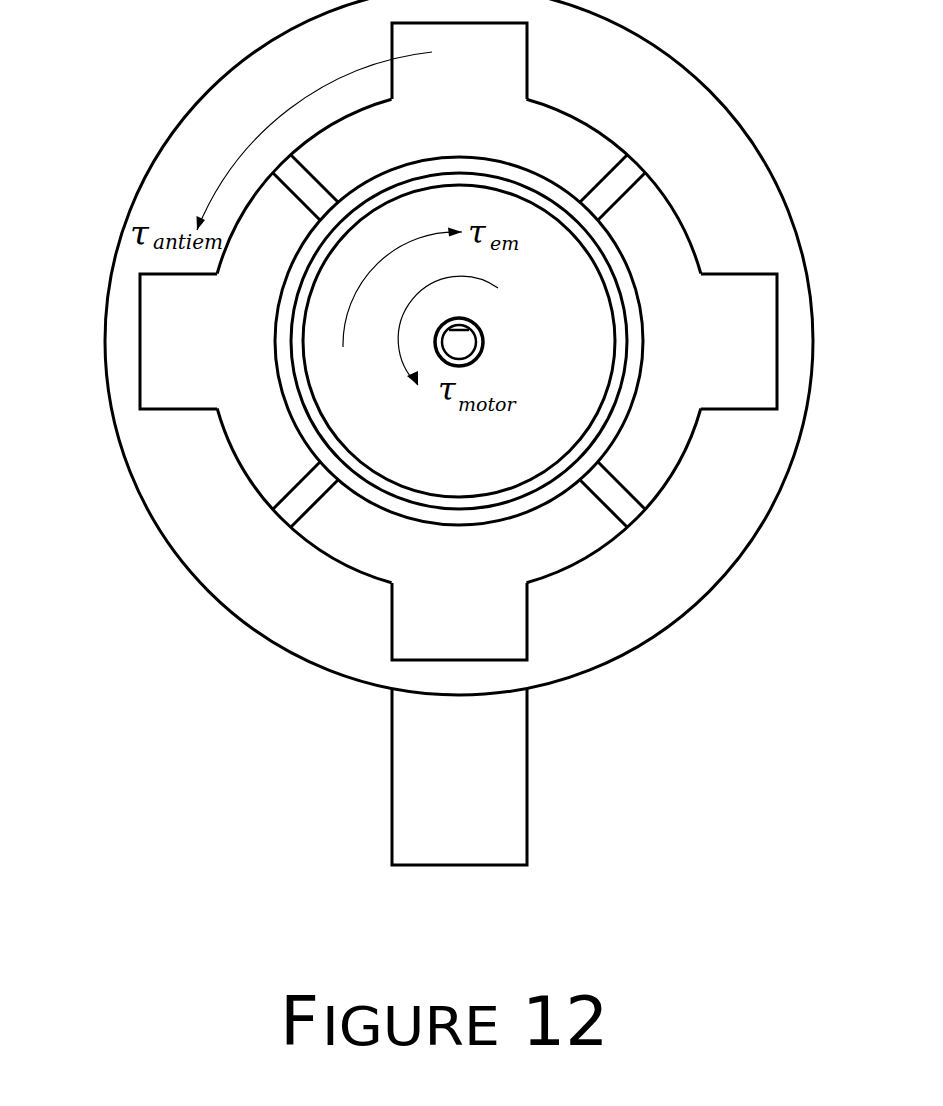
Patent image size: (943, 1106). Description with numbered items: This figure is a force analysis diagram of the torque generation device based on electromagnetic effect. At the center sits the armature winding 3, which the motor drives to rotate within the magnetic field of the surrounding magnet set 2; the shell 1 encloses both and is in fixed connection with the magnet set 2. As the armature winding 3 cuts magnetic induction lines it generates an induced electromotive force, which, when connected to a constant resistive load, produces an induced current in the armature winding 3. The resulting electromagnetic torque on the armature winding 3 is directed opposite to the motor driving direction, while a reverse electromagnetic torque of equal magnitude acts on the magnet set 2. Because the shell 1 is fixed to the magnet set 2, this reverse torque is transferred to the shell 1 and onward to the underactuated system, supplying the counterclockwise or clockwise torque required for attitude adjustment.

The shell 1 is at (212, 507).
The magnet set 2 is at (172, 337).
The armature winding 3 is at (542, 427).